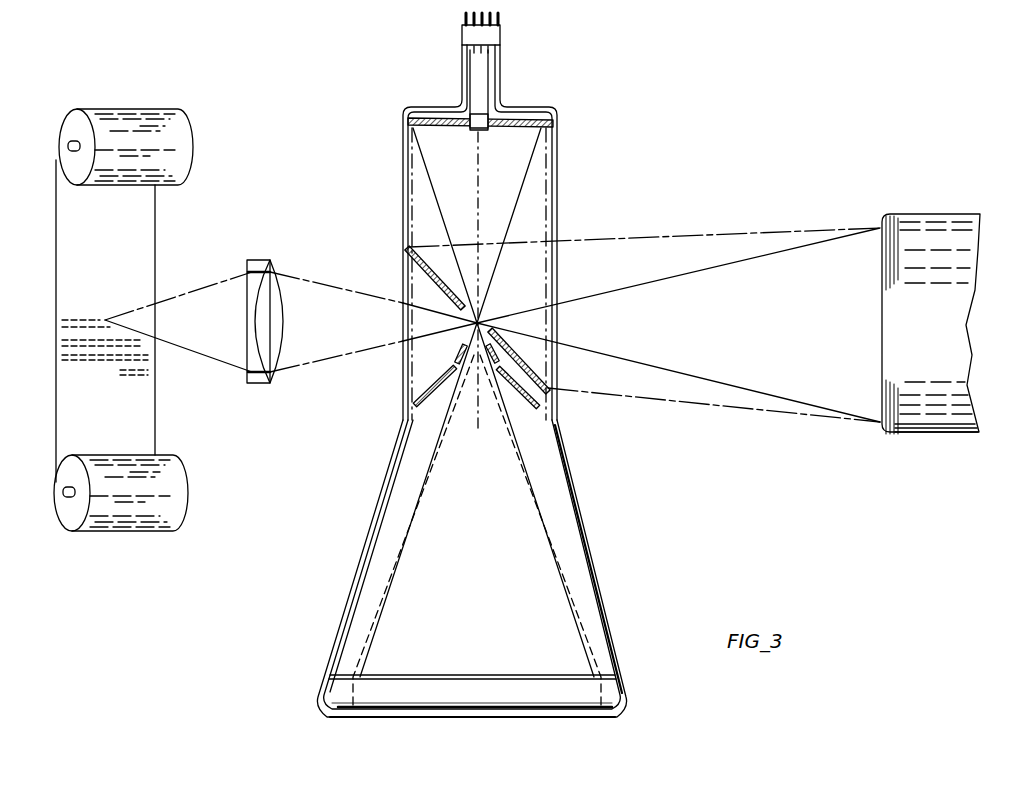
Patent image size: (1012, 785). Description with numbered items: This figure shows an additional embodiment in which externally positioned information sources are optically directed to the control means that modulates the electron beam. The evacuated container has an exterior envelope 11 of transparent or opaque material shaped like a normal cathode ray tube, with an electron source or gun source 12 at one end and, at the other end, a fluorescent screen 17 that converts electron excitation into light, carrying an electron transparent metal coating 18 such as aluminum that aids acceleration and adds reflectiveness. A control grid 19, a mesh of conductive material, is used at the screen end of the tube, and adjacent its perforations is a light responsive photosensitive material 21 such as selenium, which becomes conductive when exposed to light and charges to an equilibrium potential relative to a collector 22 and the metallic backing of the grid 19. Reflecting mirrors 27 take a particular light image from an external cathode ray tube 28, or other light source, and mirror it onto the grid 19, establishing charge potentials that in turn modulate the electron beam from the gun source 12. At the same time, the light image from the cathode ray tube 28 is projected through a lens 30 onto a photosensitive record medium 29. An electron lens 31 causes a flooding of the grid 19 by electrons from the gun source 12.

The exterior envelope 11 is at (585, 558).
The electron source 12 is at (484, 78).
The fluorescent screen 17 is at (372, 716).
The electron transparent metal coating 18 is at (510, 707).
The control grid 19 is at (478, 678).
The light responsive photosensitive material 21 is at (425, 677).
The collector 22 is at (362, 578).
The reflecting mirrors 27 is at (423, 245).
The cathode ray tube 28 is at (946, 470).
The photosensitive record medium 29 is at (140, 425).
The lens 30 is at (270, 362).
The electron lens 31 is at (418, 410).